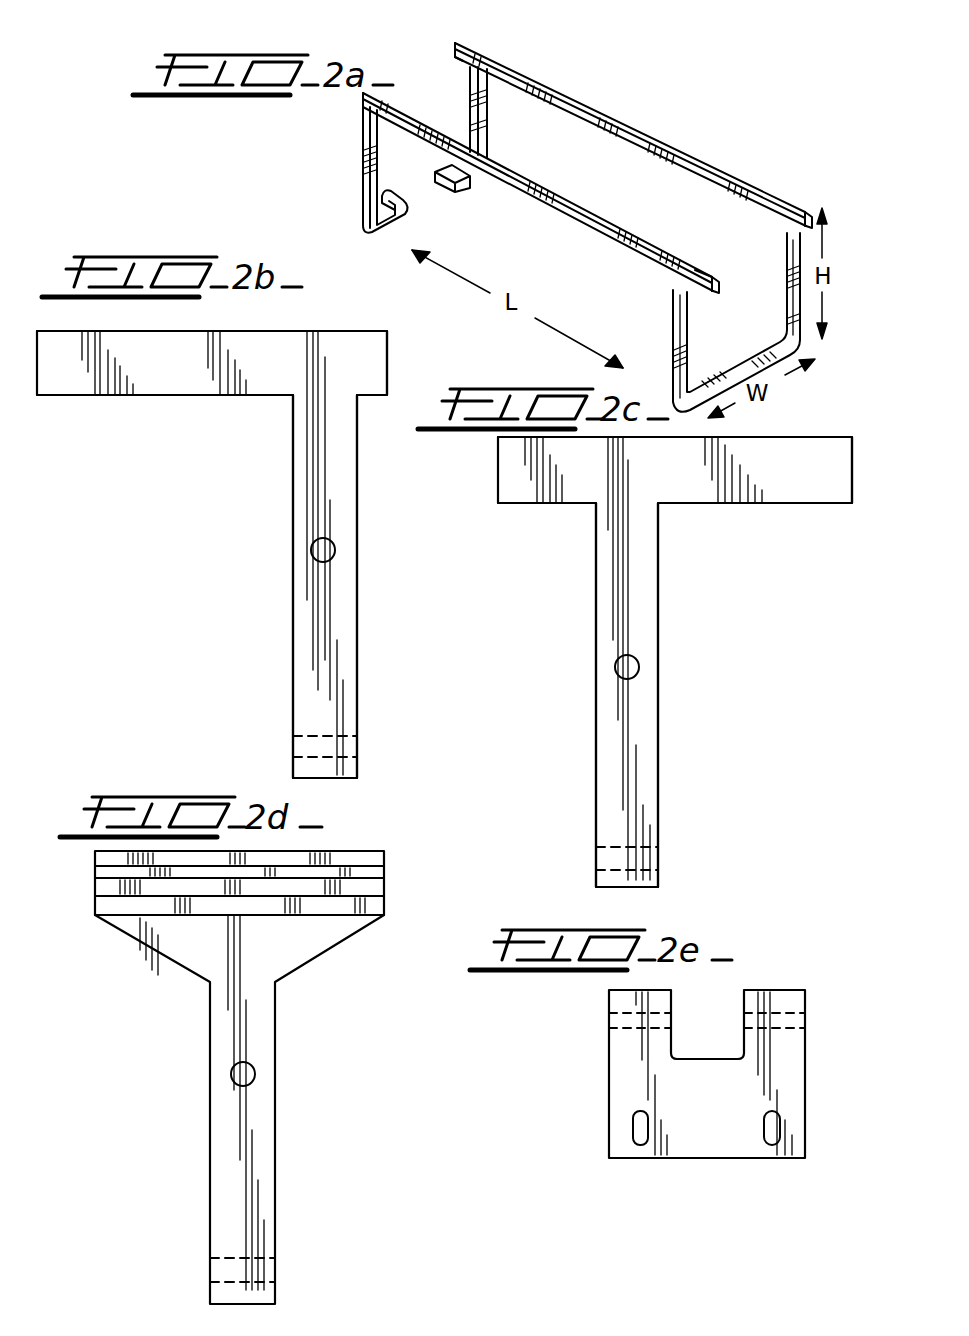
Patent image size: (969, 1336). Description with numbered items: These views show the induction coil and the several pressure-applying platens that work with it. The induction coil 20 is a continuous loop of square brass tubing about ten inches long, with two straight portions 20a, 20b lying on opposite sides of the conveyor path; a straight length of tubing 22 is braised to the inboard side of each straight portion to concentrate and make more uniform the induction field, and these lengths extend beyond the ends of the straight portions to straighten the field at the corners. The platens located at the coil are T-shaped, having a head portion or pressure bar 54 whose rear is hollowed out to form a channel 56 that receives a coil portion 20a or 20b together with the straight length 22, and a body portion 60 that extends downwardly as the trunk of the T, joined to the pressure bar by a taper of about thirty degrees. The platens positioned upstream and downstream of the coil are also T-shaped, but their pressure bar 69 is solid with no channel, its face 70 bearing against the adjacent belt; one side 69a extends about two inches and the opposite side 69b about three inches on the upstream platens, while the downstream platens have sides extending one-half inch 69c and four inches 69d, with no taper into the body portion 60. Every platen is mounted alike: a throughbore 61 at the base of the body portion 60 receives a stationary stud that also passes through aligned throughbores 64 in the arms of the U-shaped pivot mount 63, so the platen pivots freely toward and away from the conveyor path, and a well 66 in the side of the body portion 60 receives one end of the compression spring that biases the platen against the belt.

In FIG. 2A, the induction coil 20 is at (615, 227).
In FIG. 2A, the straight portion 20a is at (783, 198).
In FIG. 2A, the straight portion 20b is at (593, 238).
In FIG. 2A, the straight length of tubing 22 is at (472, 47).
In FIG. 2D, the pressure bar 54 is at (245, 1077).
In FIG. 2D, the channel 56 is at (377, 883).
In FIG. 2B, the body portion 60 is at (335, 554).
In FIG. 2C, the body portion 60 is at (666, 662).
In FIG. 2D, the body portion 60 is at (239, 1109).
In FIG. 2B, the throughbore 61 is at (352, 747).
In FIG. 2C, the throughbore 61 is at (660, 858).
In FIG. 2D, the throughbore 61 is at (275, 1268).
In FIG. 2E, the pivot mount 63 is at (702, 1070).
In FIG. 2E, the throughbores 64 is at (633, 1023).
In FIG. 2B, the well 66 is at (312, 555).
In FIG. 2C, the well 66 is at (638, 668).
In FIG. 2D, the well 66 is at (255, 1077).
In FIG. 2B, the pressure bar 69 is at (236, 554).
In FIG. 2C, the pressure bar 69 is at (634, 633).
In FIG. 2C, the side of pressure bar 69a is at (508, 478).
In FIG. 2C, the side of pressure bar 69b is at (792, 455).
In FIG. 2B, the side of pressure bar 69c is at (374, 382).
In FIG. 2B, the side of pressure bar 69d is at (75, 372).
In FIG. 2B, the face 70 is at (213, 380).
In FIG. 2C, the face 70 is at (582, 487).